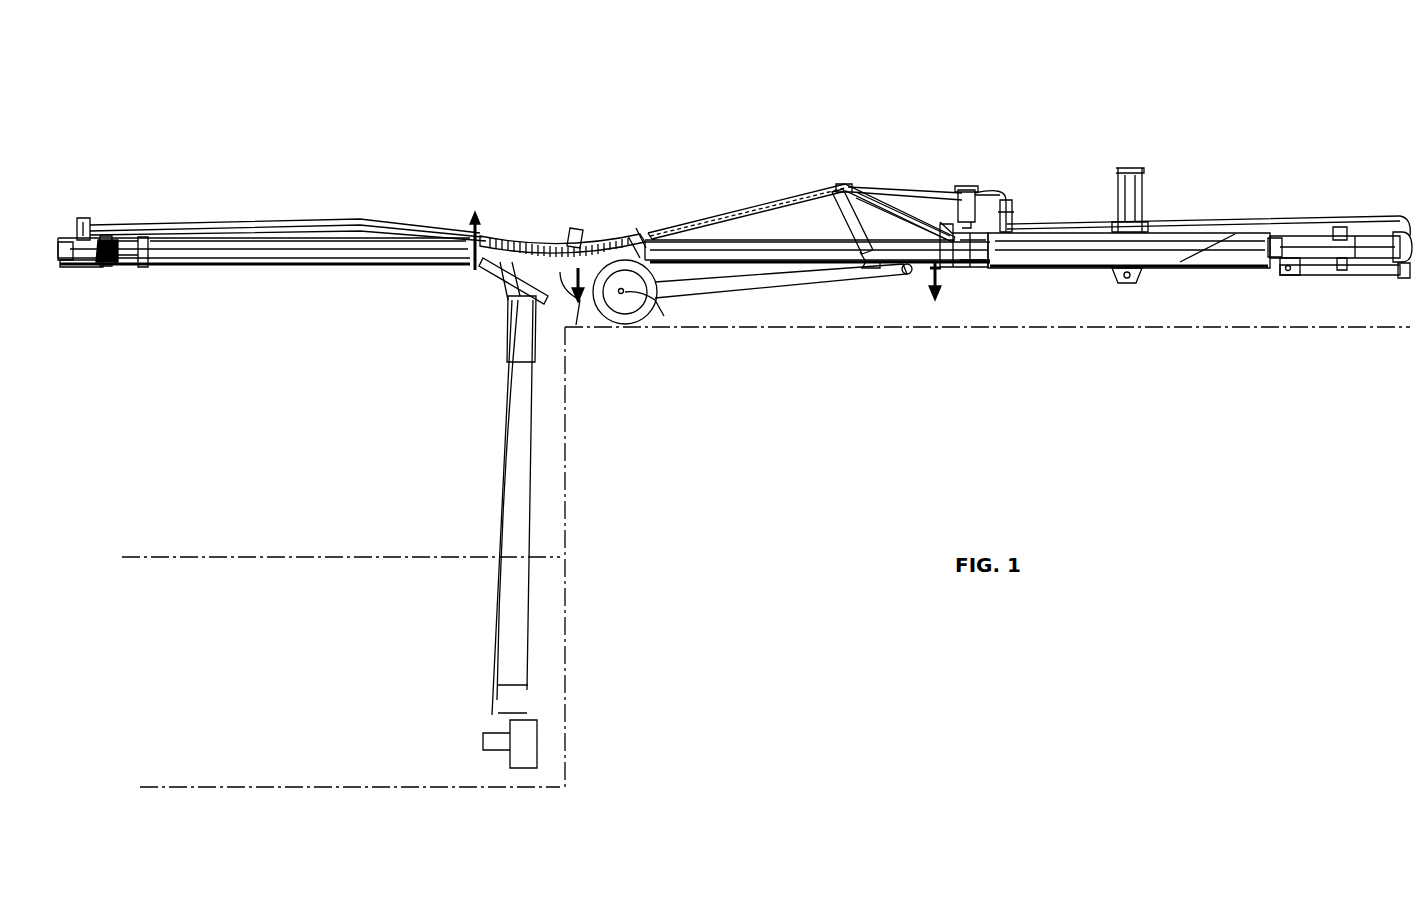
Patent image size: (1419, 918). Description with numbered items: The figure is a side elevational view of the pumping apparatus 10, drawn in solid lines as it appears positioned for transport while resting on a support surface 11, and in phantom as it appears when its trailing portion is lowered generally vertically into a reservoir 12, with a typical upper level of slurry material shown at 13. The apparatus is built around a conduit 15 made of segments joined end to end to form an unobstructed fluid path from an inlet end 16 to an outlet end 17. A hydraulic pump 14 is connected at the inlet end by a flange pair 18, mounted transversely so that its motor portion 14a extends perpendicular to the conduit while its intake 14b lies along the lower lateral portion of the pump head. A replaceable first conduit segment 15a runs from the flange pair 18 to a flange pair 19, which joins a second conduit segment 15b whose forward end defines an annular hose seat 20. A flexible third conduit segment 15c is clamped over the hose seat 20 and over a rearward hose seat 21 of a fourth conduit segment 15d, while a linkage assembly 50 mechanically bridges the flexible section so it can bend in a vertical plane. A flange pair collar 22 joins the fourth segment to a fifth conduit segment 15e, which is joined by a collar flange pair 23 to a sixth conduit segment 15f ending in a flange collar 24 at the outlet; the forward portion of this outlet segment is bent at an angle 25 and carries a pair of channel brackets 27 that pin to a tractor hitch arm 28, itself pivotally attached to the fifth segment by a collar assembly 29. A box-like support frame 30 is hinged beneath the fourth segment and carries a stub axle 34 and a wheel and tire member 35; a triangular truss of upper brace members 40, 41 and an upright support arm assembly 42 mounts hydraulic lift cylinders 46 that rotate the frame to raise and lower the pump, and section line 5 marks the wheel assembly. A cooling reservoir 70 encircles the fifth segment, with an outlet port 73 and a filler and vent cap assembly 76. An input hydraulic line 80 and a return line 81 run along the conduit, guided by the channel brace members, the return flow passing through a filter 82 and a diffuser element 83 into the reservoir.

The pumping apparatus 10 is at (1001, 112).
The support surface 11 is at (1058, 328).
The reservoir 12 is at (265, 786).
The upper level of slurry material 13 is at (330, 556).
The hydraulic pump 14 is at (64, 240).
The motor portion 14a is at (84, 222).
The intake or inlet 14b is at (77, 267).
The conduit 15 is at (288, 262).
The first conduit segment 15a is at (120, 242).
The second conduit segment 15b is at (352, 262).
The third conduit segment 15c is at (530, 236).
The fourth conduit segment 15d is at (770, 244).
The fifth conduit segment 15e is at (980, 258).
The sixth conduit segment 15f is at (1294, 232).
The inlet end 16 is at (96, 262).
The outlet end 17 is at (1410, 220).
The flange pair 18 is at (112, 262).
The flange pair 19 is at (150, 240).
The annular hose seat 20 is at (475, 218).
The annular hose seat 21 is at (640, 250).
The flange pair collar 22 is at (956, 264).
The collar flange pair 23 is at (1268, 238).
The flange collar 24 is at (1402, 278).
The angle 25 is at (1363, 236).
The channel brackets 27 is at (1333, 232).
The tractor hitch arm 28 is at (1322, 275).
The collar assembly 29 is at (1283, 258).
The support frame 30 is at (804, 278).
The stub axle 34 is at (655, 310).
The wheel and tire member 35 is at (633, 325).
The upper brace member 40 is at (748, 206).
The upper brace member 41 is at (872, 188).
The upright support arm assembly 42 is at (840, 236).
The hydraulic lift cylinders 46 is at (864, 208).
The linkage assembly 50 is at (494, 297).
The section line 5 is at (756, 298).
The cooling reservoir 70 is at (1078, 250).
The outlet port 73 is at (1128, 283).
The hydraulic filler and vent cap assembly 76 is at (1142, 195).
The input hydraulic line 80 is at (330, 230).
The return line 81 is at (282, 224).
The filter 82 is at (964, 190).
The diffuser element 83 is at (1010, 208).